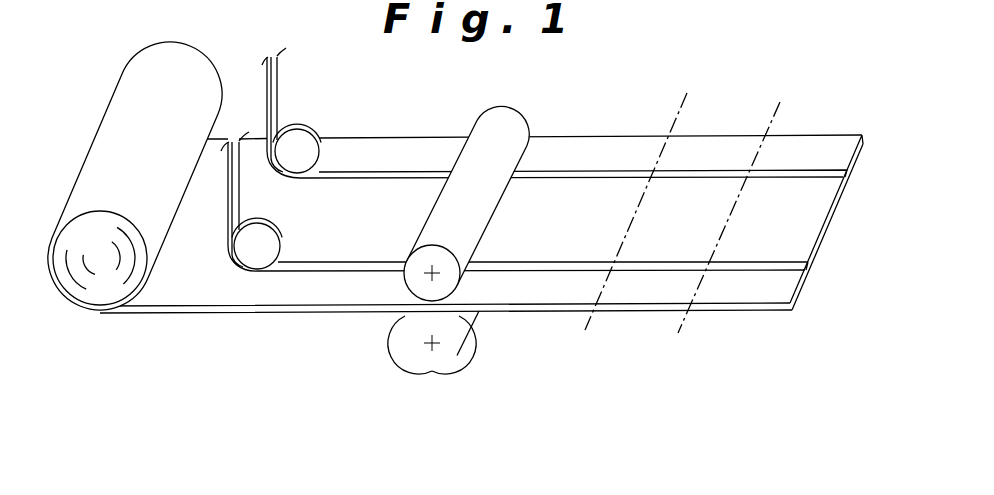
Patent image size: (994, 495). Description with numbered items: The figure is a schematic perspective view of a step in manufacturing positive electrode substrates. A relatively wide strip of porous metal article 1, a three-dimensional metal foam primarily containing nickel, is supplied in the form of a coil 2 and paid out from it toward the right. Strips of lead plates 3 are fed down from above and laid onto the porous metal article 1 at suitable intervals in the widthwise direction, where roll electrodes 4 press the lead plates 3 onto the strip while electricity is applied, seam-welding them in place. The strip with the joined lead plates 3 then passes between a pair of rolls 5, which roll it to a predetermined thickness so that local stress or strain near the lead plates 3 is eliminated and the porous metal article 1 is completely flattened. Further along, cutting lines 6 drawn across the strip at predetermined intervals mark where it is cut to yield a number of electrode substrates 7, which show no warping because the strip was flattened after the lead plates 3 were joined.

The porous metal article 1 is at (212, 277).
The coil 2 is at (128, 145).
The lead plates 3 is at (373, 174).
The roll electrodes 4 is at (297, 158).
The pair of rolls 5 is at (417, 283).
The cutting lines 6 is at (593, 320).
The electrode substrates 7 is at (650, 292).